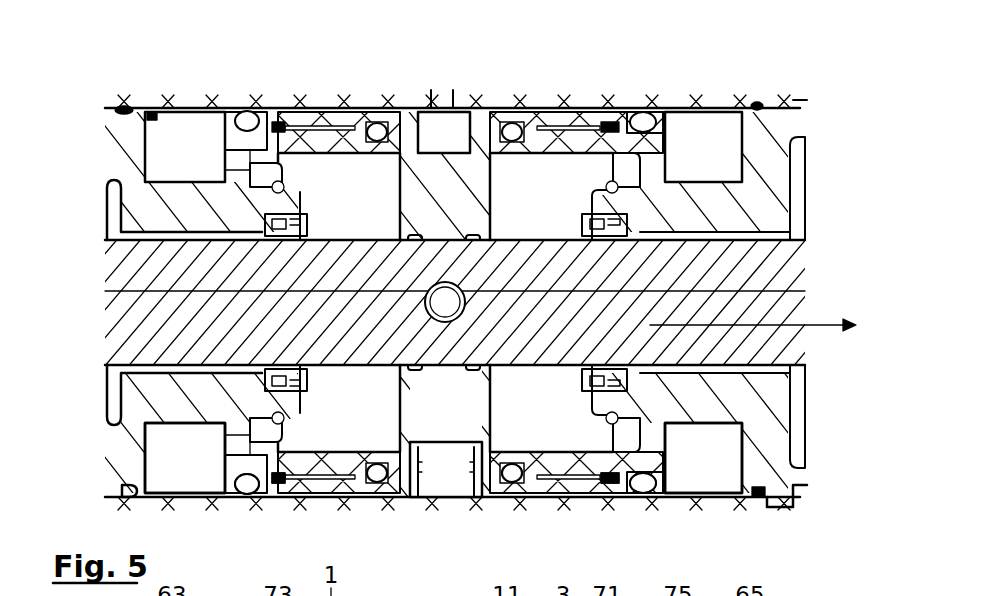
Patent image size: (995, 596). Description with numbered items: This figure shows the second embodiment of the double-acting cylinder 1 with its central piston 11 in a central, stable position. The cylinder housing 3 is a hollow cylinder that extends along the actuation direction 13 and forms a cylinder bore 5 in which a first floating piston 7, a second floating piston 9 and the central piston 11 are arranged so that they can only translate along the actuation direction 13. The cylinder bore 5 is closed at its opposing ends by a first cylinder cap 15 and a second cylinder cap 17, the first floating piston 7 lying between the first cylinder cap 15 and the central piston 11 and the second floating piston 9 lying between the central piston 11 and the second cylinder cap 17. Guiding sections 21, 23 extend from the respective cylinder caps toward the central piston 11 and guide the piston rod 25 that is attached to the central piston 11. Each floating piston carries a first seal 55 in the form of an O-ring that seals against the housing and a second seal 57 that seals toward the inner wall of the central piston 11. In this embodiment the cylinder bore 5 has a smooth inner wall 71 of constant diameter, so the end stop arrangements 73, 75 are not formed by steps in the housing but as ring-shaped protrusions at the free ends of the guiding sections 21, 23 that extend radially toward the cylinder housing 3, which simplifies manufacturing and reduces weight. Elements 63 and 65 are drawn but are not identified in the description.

The double-acting cylinder 1 is at (381, 99).
The cylinder housing 3 is at (540, 112).
The cylinder bore 5 is at (335, 206).
The first floating piston 7 is at (241, 108).
The second floating piston 9 is at (630, 170).
The central piston 11 is at (480, 115).
The actuation direction 13 is at (795, 327).
The first cylinder cap 15 is at (152, 197).
The second cylinder cap 17 is at (762, 197).
The guiding section 21 is at (197, 420).
The guiding section 23 is at (690, 422).
The piston rod 25 is at (137, 307).
The first seal 55 is at (250, 492).
The second seal 57 is at (297, 500).
The bearing block 63 is at (150, 110).
The bearing block 65 is at (740, 110).
The smooth inner wall 71 is at (625, 140).
The end stop arrangement 73 is at (265, 167).
The end stop arrangement 75 is at (650, 108).